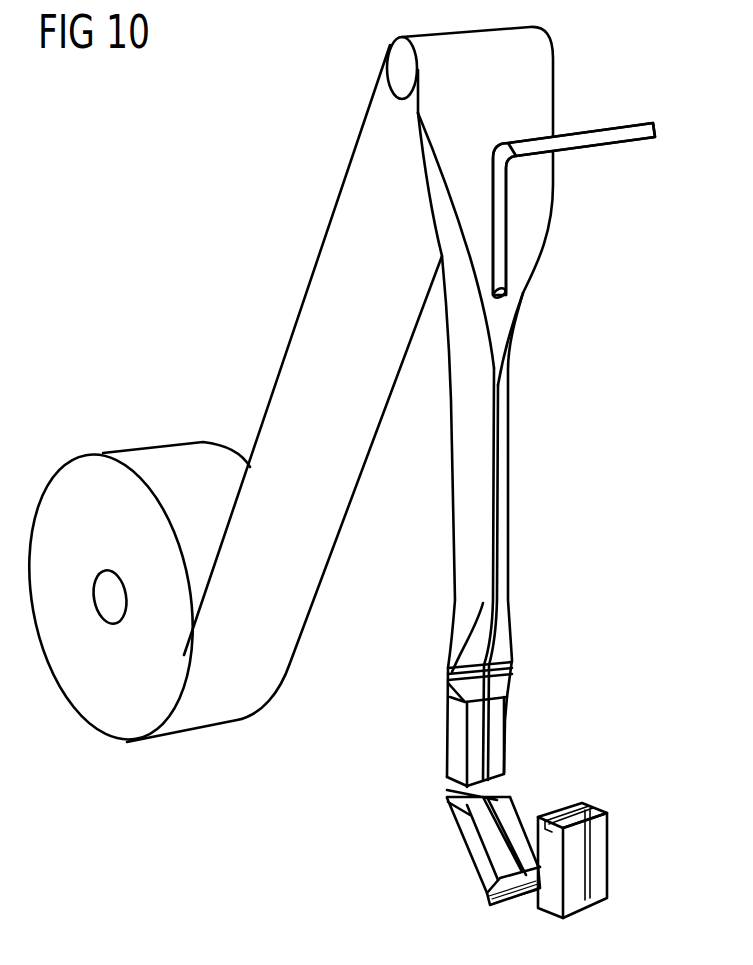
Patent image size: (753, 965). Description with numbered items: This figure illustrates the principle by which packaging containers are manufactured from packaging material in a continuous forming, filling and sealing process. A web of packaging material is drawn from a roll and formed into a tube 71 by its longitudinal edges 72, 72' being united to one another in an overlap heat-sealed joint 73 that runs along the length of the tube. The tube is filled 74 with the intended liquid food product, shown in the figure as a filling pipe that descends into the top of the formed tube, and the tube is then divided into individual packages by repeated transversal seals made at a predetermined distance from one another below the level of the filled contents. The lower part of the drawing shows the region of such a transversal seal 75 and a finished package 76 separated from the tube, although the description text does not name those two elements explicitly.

The tube 71 is at (465, 493).
The longitudinal edge 72 is at (550, 240).
The longitudinal edge 72' is at (549, 291).
The overlap heat-sealed joint 73 is at (498, 397).
The filling 74 is at (610, 135).
The seam band 75 is at (512, 668).
The block 76 is at (597, 863).